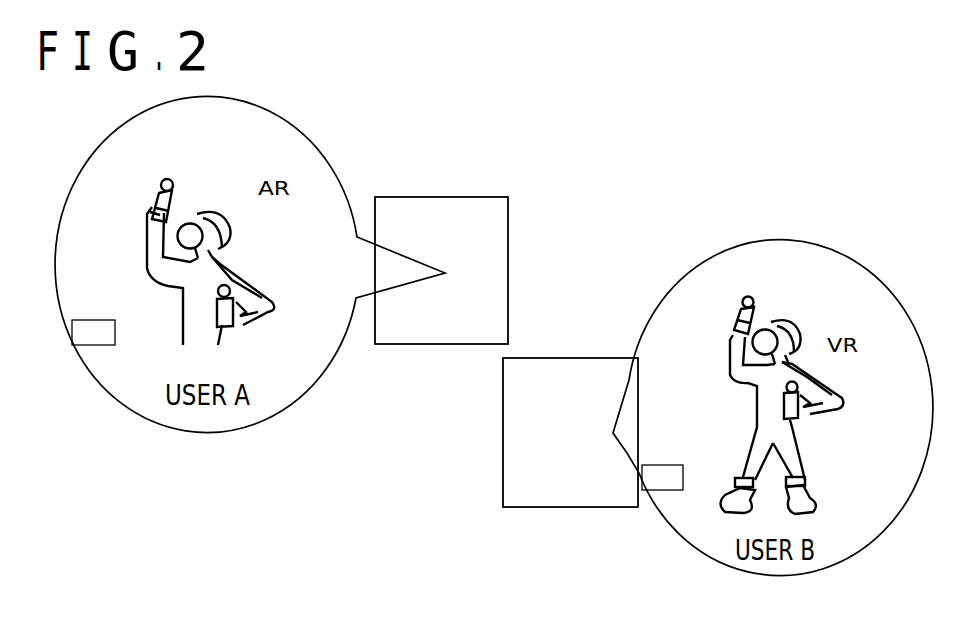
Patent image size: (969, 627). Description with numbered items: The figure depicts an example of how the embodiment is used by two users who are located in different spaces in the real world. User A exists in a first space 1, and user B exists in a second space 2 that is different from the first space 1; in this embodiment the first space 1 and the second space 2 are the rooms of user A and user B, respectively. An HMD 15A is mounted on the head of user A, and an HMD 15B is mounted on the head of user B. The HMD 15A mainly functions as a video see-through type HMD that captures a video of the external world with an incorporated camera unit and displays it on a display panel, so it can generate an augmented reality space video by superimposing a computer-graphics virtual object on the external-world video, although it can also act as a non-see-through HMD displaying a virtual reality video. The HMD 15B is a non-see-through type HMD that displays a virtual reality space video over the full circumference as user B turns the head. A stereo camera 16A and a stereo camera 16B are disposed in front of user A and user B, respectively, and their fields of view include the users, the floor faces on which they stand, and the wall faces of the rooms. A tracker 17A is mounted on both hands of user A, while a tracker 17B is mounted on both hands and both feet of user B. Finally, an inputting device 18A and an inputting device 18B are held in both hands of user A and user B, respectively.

The first space 1 is at (289, 108).
The second space 2 is at (871, 258).
The HMD 15A is at (212, 212).
The HMD 15B is at (793, 328).
The stereo camera 16A is at (82, 320).
The stereo camera 16B is at (662, 491).
The tracker 17A is at (165, 183).
The tracker 17B is at (743, 301).
The inputting device 18A is at (150, 212).
The inputting device 18B is at (737, 336).